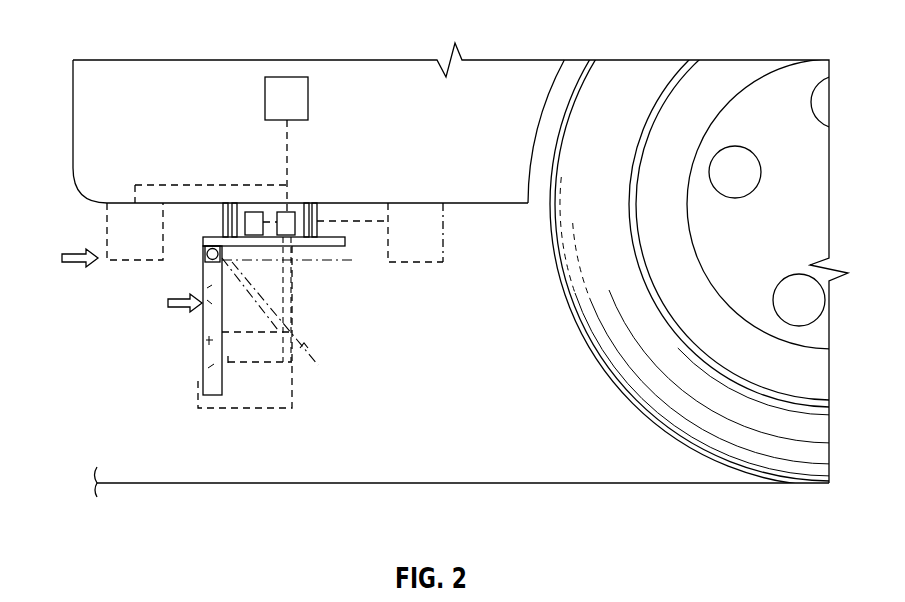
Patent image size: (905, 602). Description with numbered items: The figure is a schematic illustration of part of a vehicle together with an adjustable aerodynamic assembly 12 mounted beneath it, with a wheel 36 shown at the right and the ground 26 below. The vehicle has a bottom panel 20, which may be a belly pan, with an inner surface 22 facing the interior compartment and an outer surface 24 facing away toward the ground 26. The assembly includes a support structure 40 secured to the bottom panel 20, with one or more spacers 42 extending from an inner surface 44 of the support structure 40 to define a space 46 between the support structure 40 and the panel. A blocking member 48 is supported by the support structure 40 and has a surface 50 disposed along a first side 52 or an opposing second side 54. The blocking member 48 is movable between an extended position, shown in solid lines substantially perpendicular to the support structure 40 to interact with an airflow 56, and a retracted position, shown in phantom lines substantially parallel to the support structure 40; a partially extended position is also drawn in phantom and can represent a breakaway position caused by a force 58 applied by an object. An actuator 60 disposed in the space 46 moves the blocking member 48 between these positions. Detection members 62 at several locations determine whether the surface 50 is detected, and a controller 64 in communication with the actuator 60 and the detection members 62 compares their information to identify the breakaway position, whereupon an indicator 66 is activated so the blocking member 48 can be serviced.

The adjustable aerodynamic assembly 12 is at (100, 208).
The bottom panel 20 is at (501, 195).
The inner surface 22 is at (521, 200).
The outer surface 24 is at (492, 206).
The ground 26 is at (463, 485).
The wheel 36 is at (635, 403).
The support structure 40 is at (203, 243).
The spacer 42 is at (223, 222).
The inner surface of the support structure 44 is at (345, 236).
The space 46 is at (331, 209).
The blocking member 48 is at (212, 397).
The surface 50 is at (167, 320).
The first side 52 is at (203, 339).
The second side 54 is at (222, 343).
The airflow 56 is at (90, 264).
The force 58 is at (186, 311).
The actuator 60 is at (253, 211).
The detection member 62 is at (107, 238).
The controller 64 is at (290, 211).
The indicator 66 is at (300, 112).